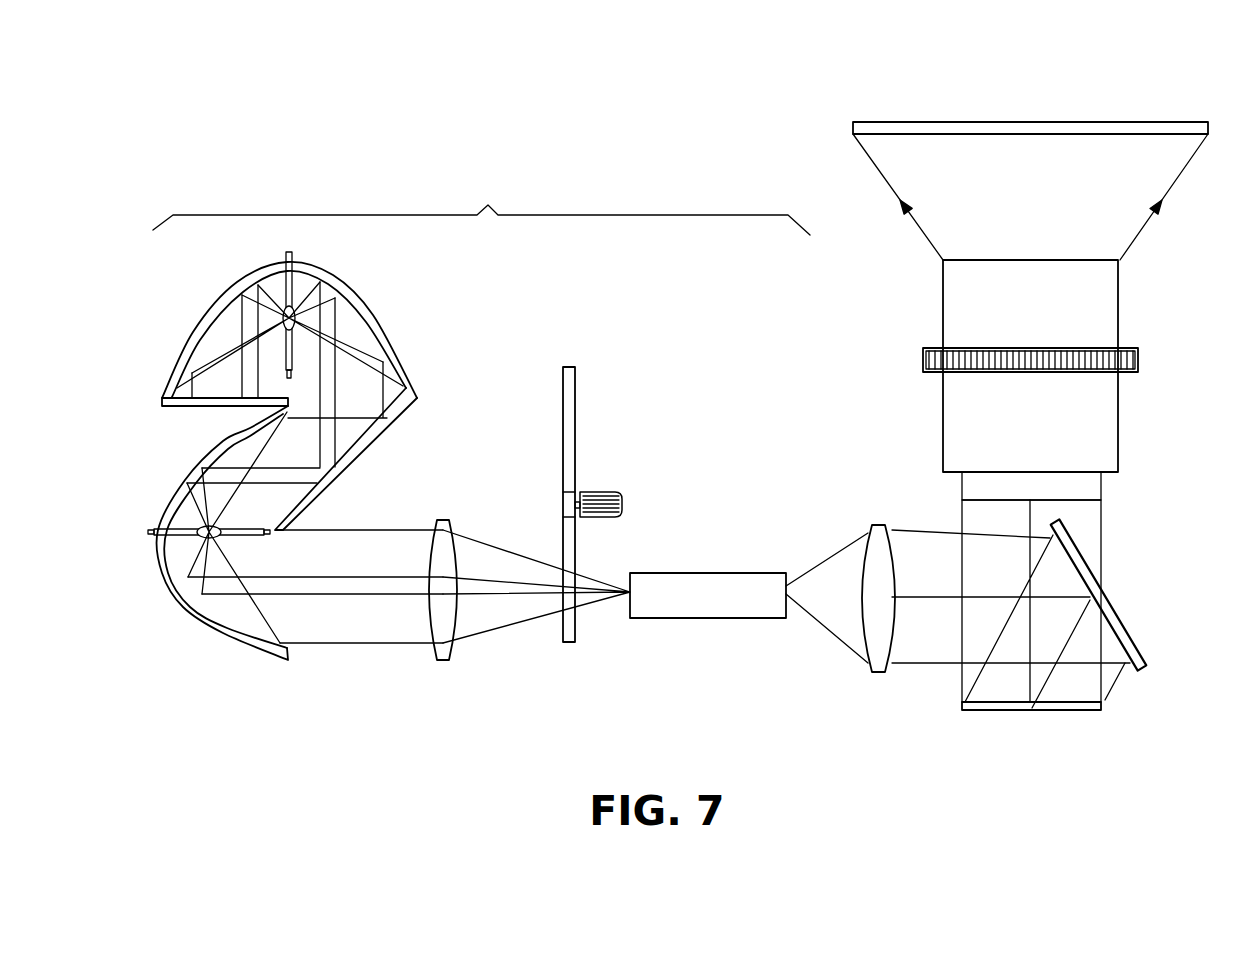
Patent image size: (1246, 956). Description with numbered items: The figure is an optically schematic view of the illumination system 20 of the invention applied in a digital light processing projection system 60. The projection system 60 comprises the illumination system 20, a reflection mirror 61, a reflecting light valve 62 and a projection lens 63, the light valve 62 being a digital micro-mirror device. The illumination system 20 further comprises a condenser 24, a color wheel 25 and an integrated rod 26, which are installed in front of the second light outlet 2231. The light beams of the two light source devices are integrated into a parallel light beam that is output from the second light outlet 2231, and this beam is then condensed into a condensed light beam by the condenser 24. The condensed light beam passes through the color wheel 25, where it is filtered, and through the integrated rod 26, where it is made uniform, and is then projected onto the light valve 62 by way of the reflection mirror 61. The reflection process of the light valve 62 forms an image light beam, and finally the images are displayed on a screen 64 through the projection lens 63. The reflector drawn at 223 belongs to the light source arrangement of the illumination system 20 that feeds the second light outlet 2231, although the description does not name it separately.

The illumination system 20 is at (481, 201).
The digital light processing projection system 60 is at (612, 130).
The reflector 223 is at (300, 648).
The second light outlet 2231 is at (282, 617).
The condenser 24 is at (447, 640).
The color wheel 25 is at (568, 635).
The integrated rod 26 is at (730, 620).
The reflection mirror 61 is at (1140, 635).
The reflecting light valve 62 is at (1060, 706).
The projection lens 63 is at (1105, 435).
The screen 64 is at (1073, 128).